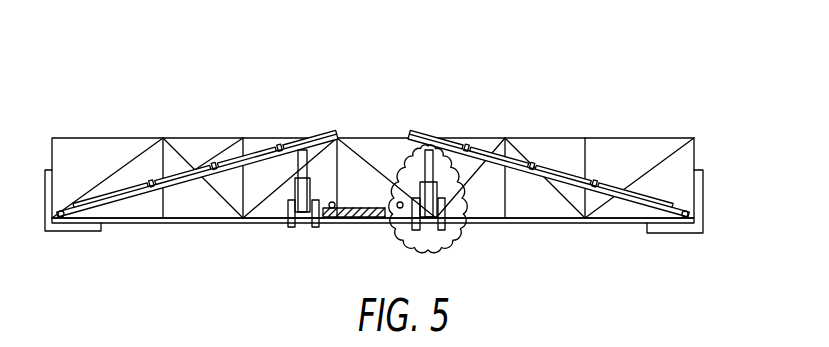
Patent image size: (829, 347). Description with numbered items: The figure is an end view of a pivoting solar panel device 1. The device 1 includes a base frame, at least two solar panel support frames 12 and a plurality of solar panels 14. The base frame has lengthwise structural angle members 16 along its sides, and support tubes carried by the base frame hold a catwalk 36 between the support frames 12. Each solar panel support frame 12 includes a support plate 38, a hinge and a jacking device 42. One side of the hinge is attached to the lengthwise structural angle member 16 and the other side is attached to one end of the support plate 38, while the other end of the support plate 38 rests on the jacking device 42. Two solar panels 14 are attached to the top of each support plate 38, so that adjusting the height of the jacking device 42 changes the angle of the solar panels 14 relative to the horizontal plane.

The pivoting solar panel device 1 is at (509, 87).
The solar panel support frame 12 is at (139, 155).
The solar panel 14 is at (215, 160).
The lengthwise structural angle member 16 is at (46, 214).
The catwalk 36 is at (377, 212).
The support plate 38 is at (112, 204).
The jacking device 42 is at (290, 192).